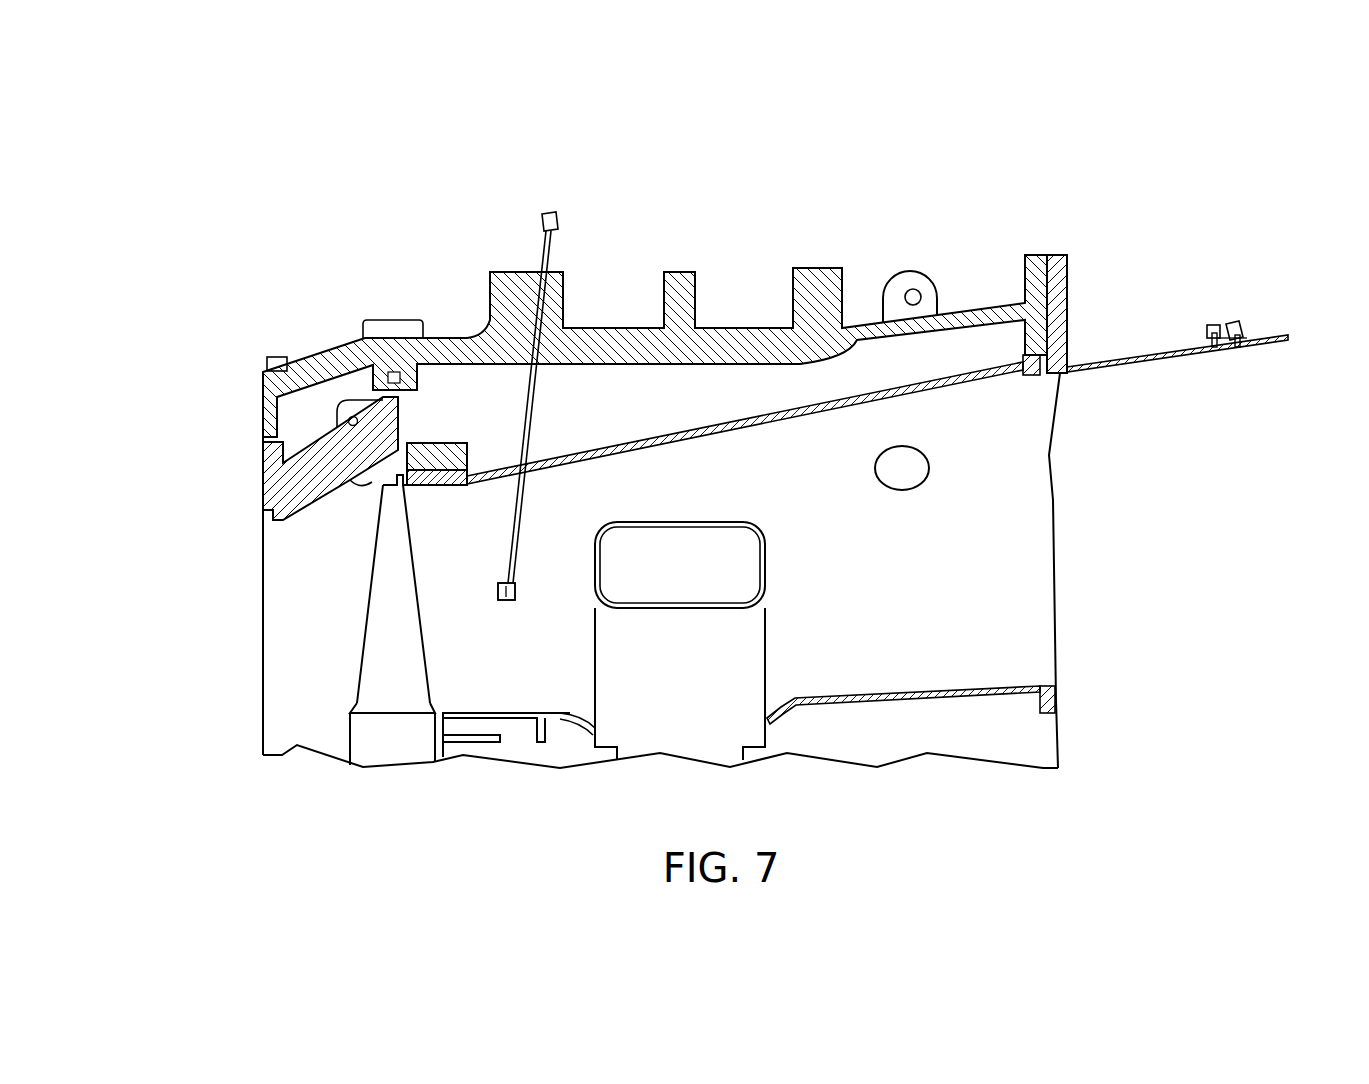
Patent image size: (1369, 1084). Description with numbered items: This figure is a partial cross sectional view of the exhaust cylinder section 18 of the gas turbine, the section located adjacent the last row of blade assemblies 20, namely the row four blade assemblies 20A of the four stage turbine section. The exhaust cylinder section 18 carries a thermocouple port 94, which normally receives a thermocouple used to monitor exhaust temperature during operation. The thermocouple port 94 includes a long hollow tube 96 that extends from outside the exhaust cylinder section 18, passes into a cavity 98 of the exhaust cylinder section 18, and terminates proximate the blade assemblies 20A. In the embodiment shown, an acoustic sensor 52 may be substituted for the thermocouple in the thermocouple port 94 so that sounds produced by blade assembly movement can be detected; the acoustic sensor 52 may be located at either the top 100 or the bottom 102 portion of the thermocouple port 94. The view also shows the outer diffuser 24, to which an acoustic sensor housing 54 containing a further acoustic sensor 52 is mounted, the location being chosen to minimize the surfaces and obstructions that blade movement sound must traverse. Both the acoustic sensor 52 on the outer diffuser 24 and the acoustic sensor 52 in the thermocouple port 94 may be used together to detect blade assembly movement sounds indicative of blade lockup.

The exhaust cylinder section 18 is at (740, 328).
The outer diffuser 24 is at (1113, 358).
The top portion of the thermocouple port 100 is at (533, 241).
The acoustic sensor 52 is at (553, 213).
The acoustic sensor housing 54 is at (1243, 333).
The thermocouple port 94 is at (520, 302).
The long hollow tube 96 is at (483, 334).
The cavity 98 is at (588, 418).
The bottom portion of the thermocouple port 102 is at (503, 570).
The blade assemblies 20 is at (383, 662).
The row 4 blade assemblies 20A is at (378, 693).